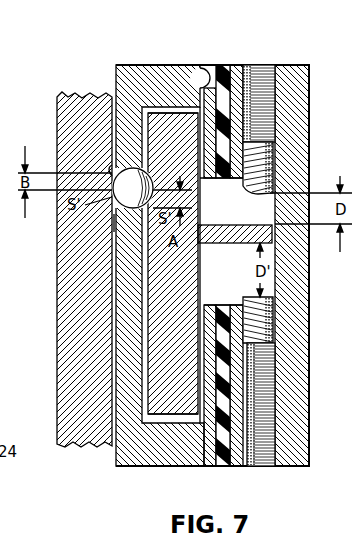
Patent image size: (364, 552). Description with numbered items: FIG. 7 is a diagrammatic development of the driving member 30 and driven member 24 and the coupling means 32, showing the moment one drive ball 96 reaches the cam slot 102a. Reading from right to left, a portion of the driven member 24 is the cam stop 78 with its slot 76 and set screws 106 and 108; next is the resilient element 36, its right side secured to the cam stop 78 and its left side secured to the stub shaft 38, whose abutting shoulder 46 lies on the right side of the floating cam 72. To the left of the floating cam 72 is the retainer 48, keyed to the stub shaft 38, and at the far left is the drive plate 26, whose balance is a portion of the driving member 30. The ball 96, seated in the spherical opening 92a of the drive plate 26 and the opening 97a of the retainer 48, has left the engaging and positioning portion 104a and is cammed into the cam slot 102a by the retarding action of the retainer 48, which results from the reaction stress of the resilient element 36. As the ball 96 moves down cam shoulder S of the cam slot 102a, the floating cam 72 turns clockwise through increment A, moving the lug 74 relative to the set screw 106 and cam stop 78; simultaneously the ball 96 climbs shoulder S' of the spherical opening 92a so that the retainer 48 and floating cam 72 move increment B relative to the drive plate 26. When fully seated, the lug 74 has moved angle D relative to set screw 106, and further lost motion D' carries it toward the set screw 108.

The driven member 24 is at (318, 136).
The drive plate 26 is at (84, 269).
The driving member 30 is at (58, 268).
The coupling means 32 is at (170, 60).
The resilient element 36 is at (226, 468).
The stub shaft 38 is at (213, 467).
The abutting shoulder 46 is at (217, 282).
The retainer 48 is at (142, 458).
The floating cam 72 is at (206, 263).
The lug 74 is at (236, 236).
The slot 76 is at (276, 292).
The cam stop 78 is at (309, 265).
The spherical opening 92a is at (107, 168).
The drive ball 96 is at (107, 205).
The opening 97a is at (114, 226).
The cam slot 102a is at (147, 164).
The engaging and positioning portion 104a is at (152, 372).
The set screw 106 is at (277, 181).
The set screw 108 is at (282, 321).